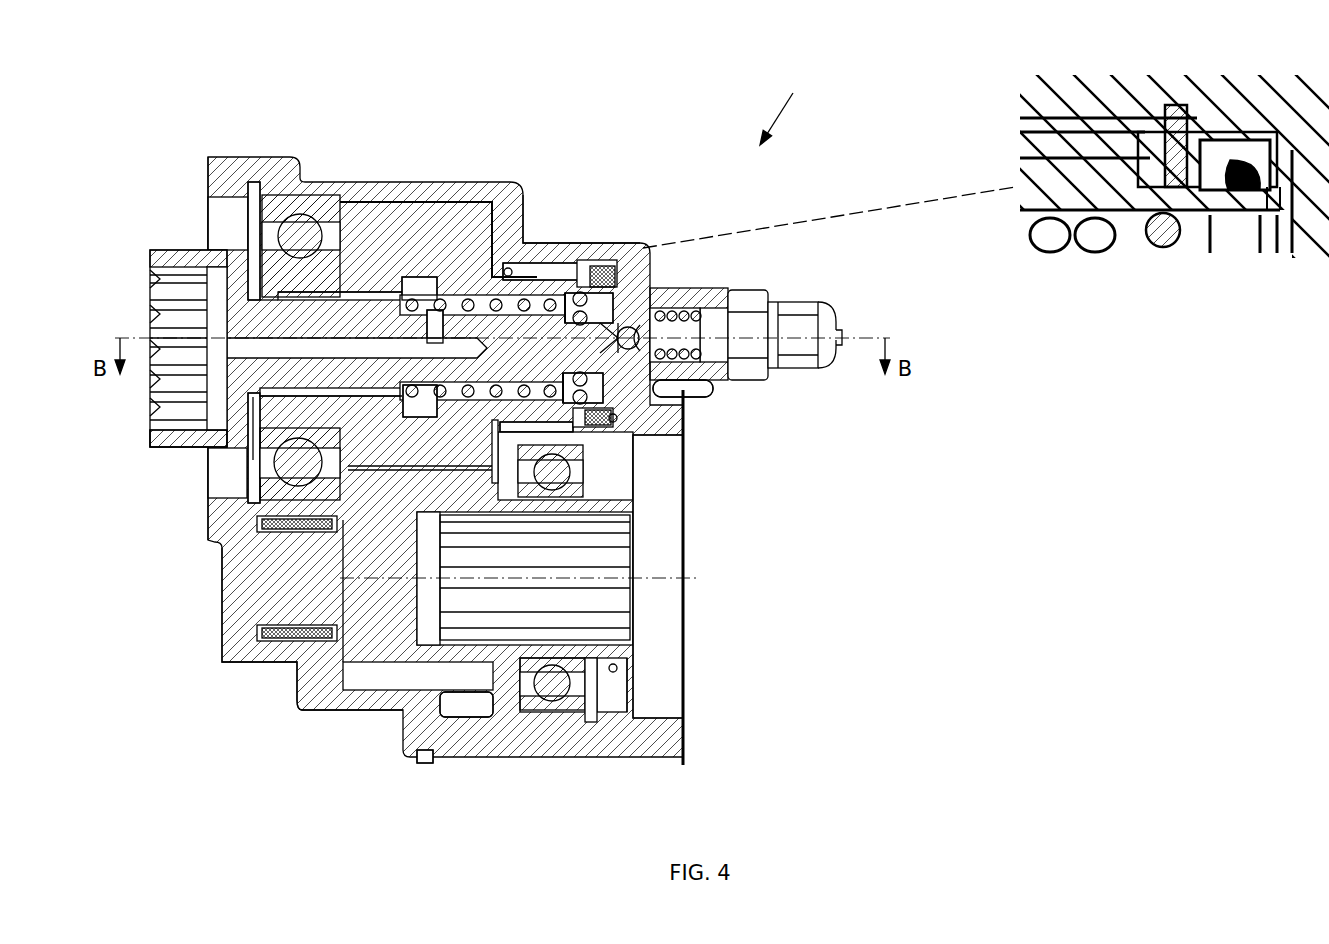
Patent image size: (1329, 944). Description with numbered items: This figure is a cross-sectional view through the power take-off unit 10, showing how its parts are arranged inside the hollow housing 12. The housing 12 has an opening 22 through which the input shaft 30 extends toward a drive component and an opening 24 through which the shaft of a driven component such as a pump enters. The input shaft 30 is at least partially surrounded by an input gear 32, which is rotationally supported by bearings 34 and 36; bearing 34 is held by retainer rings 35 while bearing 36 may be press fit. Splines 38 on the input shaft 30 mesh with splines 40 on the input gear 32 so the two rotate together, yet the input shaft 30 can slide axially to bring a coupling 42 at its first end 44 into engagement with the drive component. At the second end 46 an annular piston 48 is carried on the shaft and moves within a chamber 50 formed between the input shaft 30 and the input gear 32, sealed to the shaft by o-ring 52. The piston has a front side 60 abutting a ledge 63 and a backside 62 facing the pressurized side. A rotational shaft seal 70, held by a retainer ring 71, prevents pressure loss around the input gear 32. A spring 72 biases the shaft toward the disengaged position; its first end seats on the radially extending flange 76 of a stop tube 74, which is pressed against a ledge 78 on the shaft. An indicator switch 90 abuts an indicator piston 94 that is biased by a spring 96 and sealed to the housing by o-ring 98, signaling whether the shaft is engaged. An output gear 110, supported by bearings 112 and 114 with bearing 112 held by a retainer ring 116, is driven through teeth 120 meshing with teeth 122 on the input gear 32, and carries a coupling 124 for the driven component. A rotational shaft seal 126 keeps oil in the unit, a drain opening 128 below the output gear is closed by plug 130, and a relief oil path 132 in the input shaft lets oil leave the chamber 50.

The power take-off unit 10 is at (786, 105).
The hollow housing 12 is at (258, 158).
The opening 22 is at (207, 212).
The opening 24 is at (658, 672).
The input shaft 30 is at (153, 329).
The input gear 32 is at (313, 347).
The bearing 34 is at (273, 493).
The retainer rings 35 is at (248, 185).
The bearing 36 is at (560, 450).
The splines 38 is at (293, 395).
The splines 40 is at (263, 422).
The coupling 42 is at (152, 408).
The first end 44 is at (152, 434).
The second end 46 is at (683, 405).
The annular piston 48 is at (627, 297).
The chamber 50 is at (490, 257).
The o-ring 52 is at (578, 297).
The front side 60 is at (555, 297).
The backside 62 is at (605, 408).
The ledge 63 is at (540, 297).
The rotational shaft seal 70 is at (600, 287).
The retainer ring 71 is at (583, 425).
The spring 72 is at (487, 297).
The stop tube 74 is at (435, 297).
The radially extending flange 76 is at (410, 297).
The ledge 78 is at (358, 300).
The indicator switch 90 is at (746, 310).
The indicator piston 94 is at (683, 308).
The spring 96 is at (707, 300).
The o-ring 98 is at (667, 360).
The output gear 110 is at (297, 618).
The bearing 112 is at (547, 707).
The bearing 114 is at (315, 640).
The retainer ring 116 is at (590, 720).
The teeth 120 is at (400, 472).
The teeth 122 is at (335, 527).
The coupling 124 is at (593, 635).
The rotational shaft seal 126 is at (630, 708).
The opening 128 is at (453, 703).
The plug 130 is at (447, 757).
The relief oil path 132 is at (347, 297).